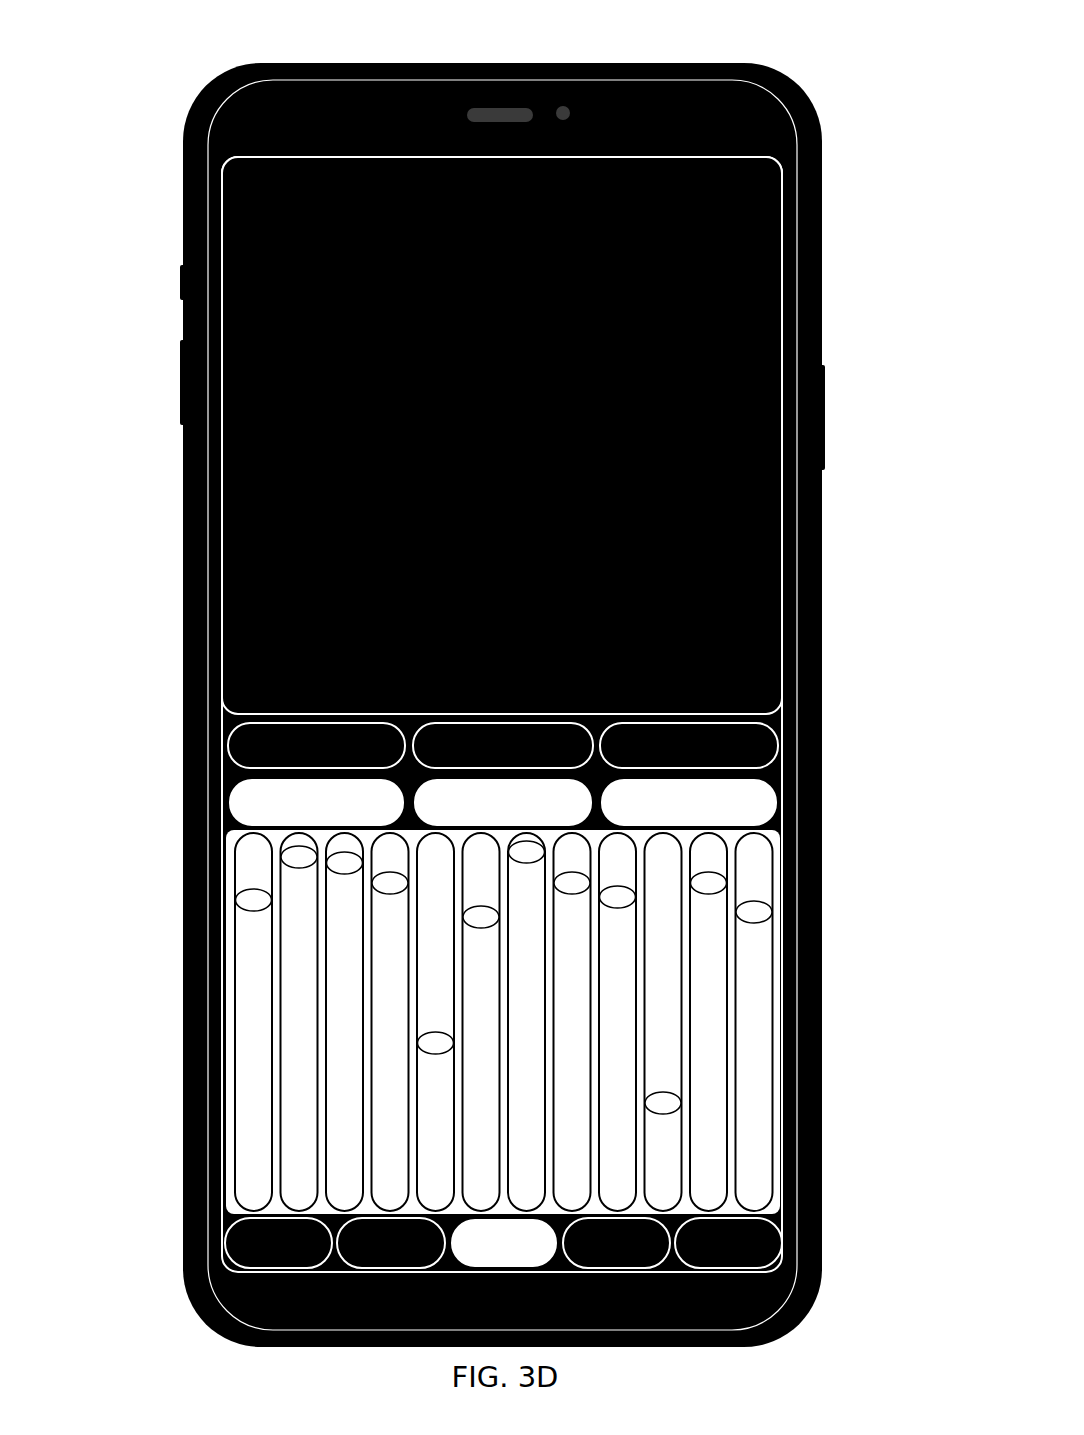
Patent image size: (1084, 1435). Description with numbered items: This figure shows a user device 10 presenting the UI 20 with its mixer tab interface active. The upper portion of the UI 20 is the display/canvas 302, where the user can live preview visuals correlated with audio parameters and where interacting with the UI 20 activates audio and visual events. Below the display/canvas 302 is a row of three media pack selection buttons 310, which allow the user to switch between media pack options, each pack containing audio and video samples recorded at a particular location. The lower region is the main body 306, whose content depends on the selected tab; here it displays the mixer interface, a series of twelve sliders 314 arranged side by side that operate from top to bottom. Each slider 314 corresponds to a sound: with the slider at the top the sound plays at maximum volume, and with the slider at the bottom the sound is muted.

The user device 10 is at (502, 677).
The UI 20 is at (230, 823).
The display/canvas 302 is at (780, 548).
The media pack selection buttons 310 is at (778, 782).
The main body 306 is at (770, 1085).
The sliders 314 is at (770, 892).